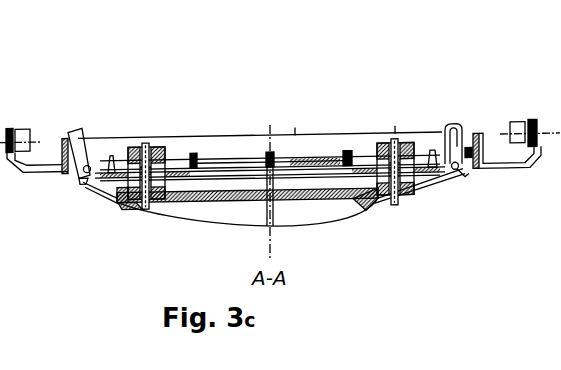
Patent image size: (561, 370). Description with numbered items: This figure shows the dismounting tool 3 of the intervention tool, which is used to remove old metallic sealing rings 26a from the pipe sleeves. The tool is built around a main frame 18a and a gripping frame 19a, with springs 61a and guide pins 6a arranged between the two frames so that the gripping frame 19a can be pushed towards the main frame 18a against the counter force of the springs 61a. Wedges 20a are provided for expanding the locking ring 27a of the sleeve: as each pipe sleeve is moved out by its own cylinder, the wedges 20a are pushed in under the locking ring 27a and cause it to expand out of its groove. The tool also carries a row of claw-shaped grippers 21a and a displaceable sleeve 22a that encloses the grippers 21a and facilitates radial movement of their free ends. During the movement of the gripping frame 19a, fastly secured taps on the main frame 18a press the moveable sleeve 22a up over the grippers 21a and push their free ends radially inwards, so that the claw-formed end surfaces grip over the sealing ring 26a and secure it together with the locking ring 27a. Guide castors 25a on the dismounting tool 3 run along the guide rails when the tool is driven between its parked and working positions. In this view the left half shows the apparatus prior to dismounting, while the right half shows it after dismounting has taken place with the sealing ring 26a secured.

The dismounting tool 3 is at (188, 131).
The guide castors 25a is at (30, 129).
The displaceable sleeve 22a is at (478, 137).
The sealing ring 26a is at (446, 126).
The claw-shaped grippers 21a is at (462, 140).
The locking ring 27a is at (445, 166).
The main frame 18a is at (323, 190).
The gripping frame 19a is at (413, 169).
The wedges 20a is at (434, 170).
The guide pins 6a is at (145, 190).
The springs 61a is at (136, 184).